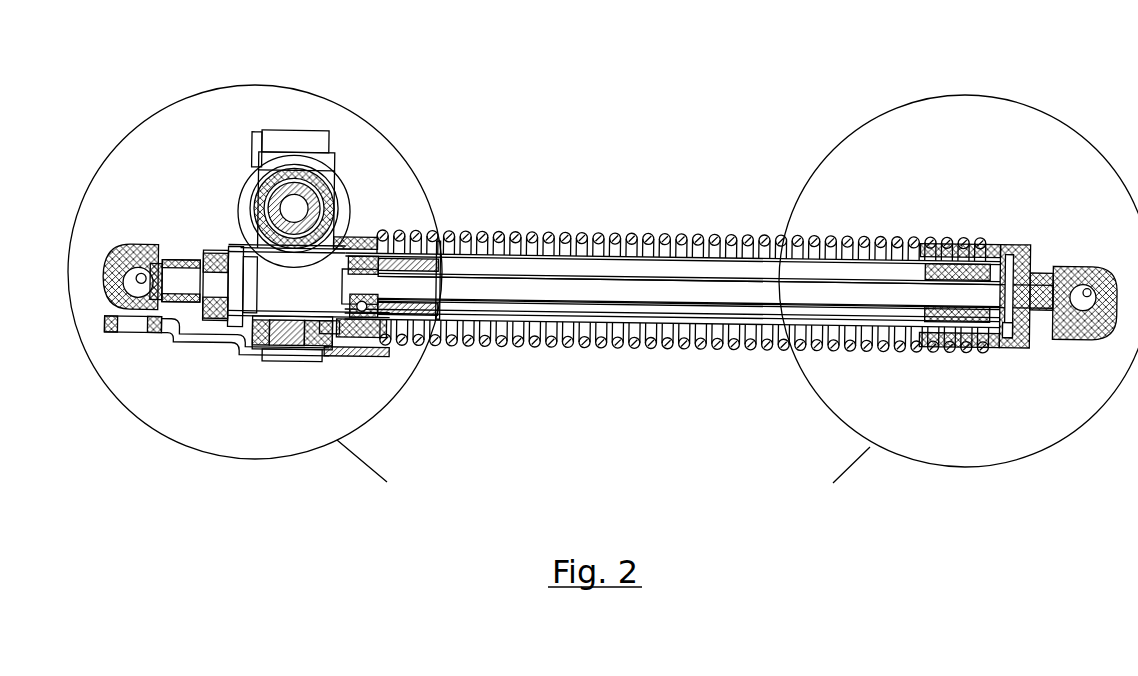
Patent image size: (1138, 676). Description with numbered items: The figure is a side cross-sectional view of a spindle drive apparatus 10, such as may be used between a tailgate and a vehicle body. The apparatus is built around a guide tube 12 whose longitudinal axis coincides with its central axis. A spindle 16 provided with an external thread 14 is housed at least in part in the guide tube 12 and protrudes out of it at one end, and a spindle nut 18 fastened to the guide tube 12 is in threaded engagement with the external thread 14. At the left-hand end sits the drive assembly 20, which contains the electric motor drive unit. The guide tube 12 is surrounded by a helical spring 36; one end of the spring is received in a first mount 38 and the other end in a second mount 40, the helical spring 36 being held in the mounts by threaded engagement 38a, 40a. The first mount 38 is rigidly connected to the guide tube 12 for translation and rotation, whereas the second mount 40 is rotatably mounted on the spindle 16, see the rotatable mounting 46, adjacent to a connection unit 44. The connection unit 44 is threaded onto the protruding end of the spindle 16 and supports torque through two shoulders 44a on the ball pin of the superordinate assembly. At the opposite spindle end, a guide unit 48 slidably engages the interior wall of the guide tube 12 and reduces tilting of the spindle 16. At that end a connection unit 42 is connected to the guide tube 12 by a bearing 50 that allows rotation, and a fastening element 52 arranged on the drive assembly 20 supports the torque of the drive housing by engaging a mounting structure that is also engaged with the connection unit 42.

The spindle drive apparatus 10 is at (787, 63).
The guide tube 12 is at (577, 232).
The external thread 14 is at (628, 278).
The spindle 16 is at (505, 293).
The spindle nut 18 is at (931, 258).
The drive assembly 20 is at (252, 148).
The helical spring 36 is at (463, 237).
The first mount 38 is at (350, 243).
The threaded engagement 38a is at (410, 235).
The second mount 40 is at (1023, 247).
The threaded engagement 40a is at (970, 237).
The connection unit 42 is at (155, 253).
The connection unit 44 is at (1095, 267).
The shoulders 44a is at (1085, 333).
The rotatable mounting 46 is at (1012, 328).
The guide unit 48 is at (412, 345).
The bearing 50 is at (222, 260).
The fastening element 52 is at (217, 340).